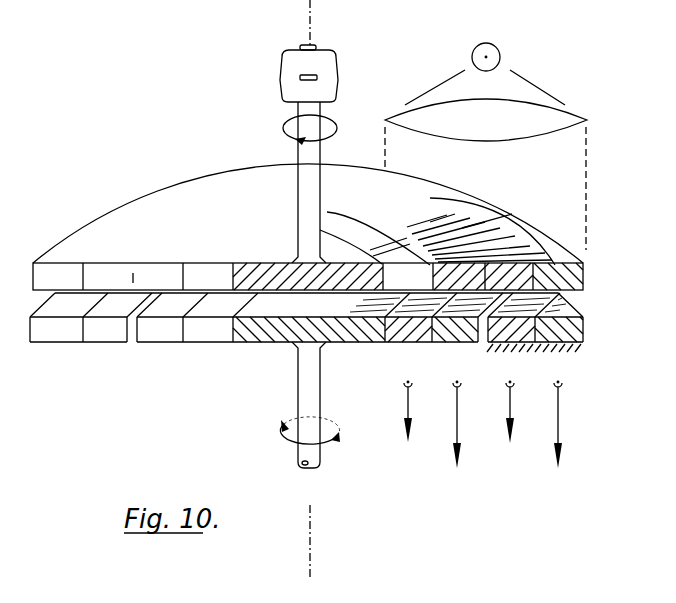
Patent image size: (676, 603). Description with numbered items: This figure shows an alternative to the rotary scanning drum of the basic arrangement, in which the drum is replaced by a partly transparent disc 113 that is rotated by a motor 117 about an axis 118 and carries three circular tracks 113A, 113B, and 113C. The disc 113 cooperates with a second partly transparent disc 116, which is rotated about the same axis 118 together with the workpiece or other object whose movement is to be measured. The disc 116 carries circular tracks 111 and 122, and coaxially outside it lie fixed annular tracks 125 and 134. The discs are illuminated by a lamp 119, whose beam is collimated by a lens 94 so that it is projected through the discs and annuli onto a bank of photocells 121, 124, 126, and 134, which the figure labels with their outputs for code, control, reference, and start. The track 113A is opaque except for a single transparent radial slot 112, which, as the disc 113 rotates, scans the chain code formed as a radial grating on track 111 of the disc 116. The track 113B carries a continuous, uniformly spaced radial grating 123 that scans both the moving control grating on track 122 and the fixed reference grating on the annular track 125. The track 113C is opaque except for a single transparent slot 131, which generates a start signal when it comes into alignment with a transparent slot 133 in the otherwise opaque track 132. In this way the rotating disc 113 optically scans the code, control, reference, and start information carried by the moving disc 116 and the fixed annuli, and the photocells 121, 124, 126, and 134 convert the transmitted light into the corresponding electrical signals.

The lens 94 is at (498, 129).
The circular track 111 is at (398, 343).
The transparent radial slot 112 is at (385, 243).
The partly transparent disc 113 is at (232, 228).
The circular track 113A is at (342, 223).
The circular track 113B is at (448, 218).
The circular track 113C is at (563, 259).
The partly transparent disc 116 is at (272, 344).
The motor 117 is at (282, 70).
The axis 118 is at (309, 27).
The lamp 119 is at (500, 57).
The photocell 121 is at (404, 389).
The circular track 122 is at (456, 341).
The radial grating 123 is at (525, 247).
The photocell 124 is at (455, 389).
The annular track 125 is at (534, 347).
The photocell 126 is at (508, 389).
The transparent slot 131 is at (518, 204).
The track 132 is at (584, 322).
The transparent slot 133 is at (556, 296).
The annular track / photocell 134 is at (556, 389).